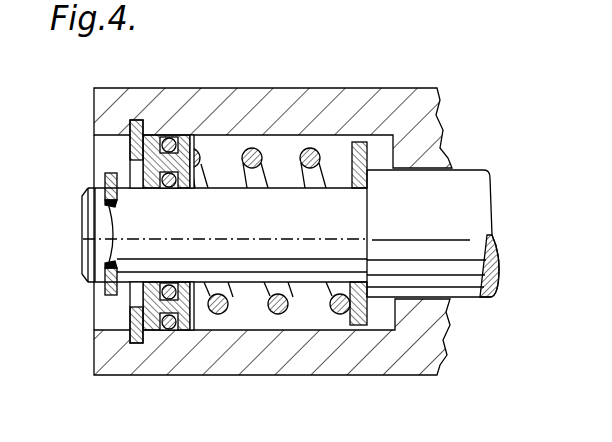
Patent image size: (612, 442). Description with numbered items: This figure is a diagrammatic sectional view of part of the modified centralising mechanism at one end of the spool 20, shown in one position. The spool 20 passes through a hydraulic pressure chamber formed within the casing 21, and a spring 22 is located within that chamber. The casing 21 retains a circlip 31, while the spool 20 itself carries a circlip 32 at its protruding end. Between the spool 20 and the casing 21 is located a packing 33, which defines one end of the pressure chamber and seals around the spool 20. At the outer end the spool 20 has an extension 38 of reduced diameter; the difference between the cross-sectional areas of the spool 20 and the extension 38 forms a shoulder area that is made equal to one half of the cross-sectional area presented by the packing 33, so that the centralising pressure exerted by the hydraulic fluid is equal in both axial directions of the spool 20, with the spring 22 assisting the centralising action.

The spool 20 is at (453, 193).
The casing 21 is at (348, 98).
The spring 22 is at (278, 312).
The circlip 31 is at (132, 338).
The circlip 32 is at (105, 290).
The packing 33 is at (150, 145).
The extension 38 is at (110, 223).